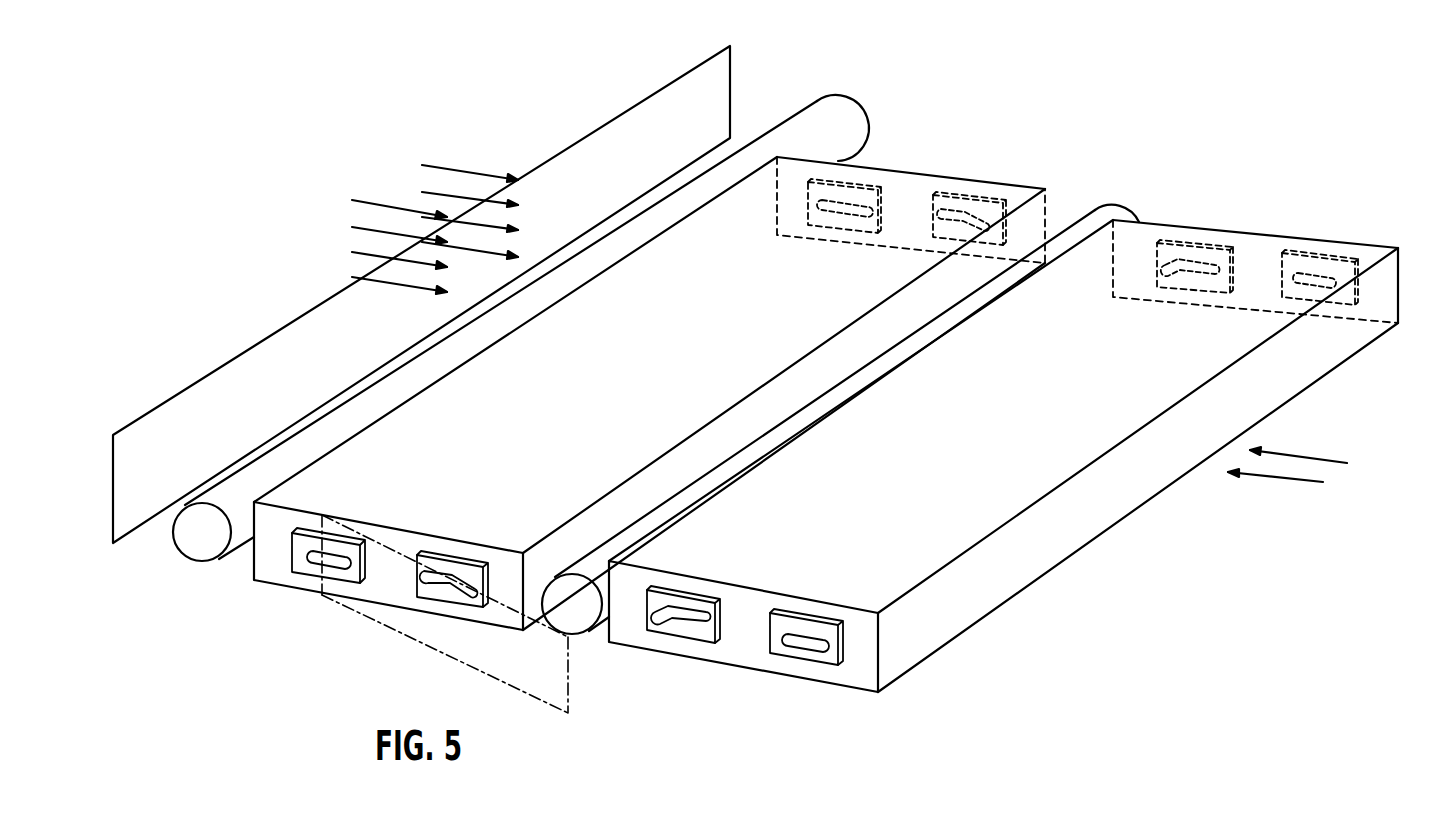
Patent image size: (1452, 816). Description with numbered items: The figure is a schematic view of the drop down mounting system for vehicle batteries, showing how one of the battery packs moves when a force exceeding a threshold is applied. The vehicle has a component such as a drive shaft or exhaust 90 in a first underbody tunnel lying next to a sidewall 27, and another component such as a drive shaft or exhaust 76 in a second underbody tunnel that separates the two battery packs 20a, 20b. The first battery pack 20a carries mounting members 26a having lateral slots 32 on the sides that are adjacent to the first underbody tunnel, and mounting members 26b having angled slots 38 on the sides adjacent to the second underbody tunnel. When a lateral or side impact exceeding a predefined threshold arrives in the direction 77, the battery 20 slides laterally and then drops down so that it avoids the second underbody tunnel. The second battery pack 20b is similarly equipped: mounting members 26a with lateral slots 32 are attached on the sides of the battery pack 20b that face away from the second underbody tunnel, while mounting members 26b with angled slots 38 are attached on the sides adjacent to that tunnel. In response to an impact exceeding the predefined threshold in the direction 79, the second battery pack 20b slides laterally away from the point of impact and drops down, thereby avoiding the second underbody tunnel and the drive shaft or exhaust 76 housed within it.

The battery 20 is at (826, 400).
The battery pack 20a is at (913, 204).
The battery pack 20b is at (1232, 266).
The mounting member 26a is at (842, 441).
The mounting member 26b is at (825, 397).
The sidewall 27 is at (712, 112).
The lateral slot 32 is at (335, 556).
The angled slot 38 is at (472, 560).
The drive shaft or exhaust 76 is at (1106, 207).
The direction 77 is at (435, 220).
The direction 79 is at (1290, 473).
The drive shaft or exhaust 90 is at (847, 122).